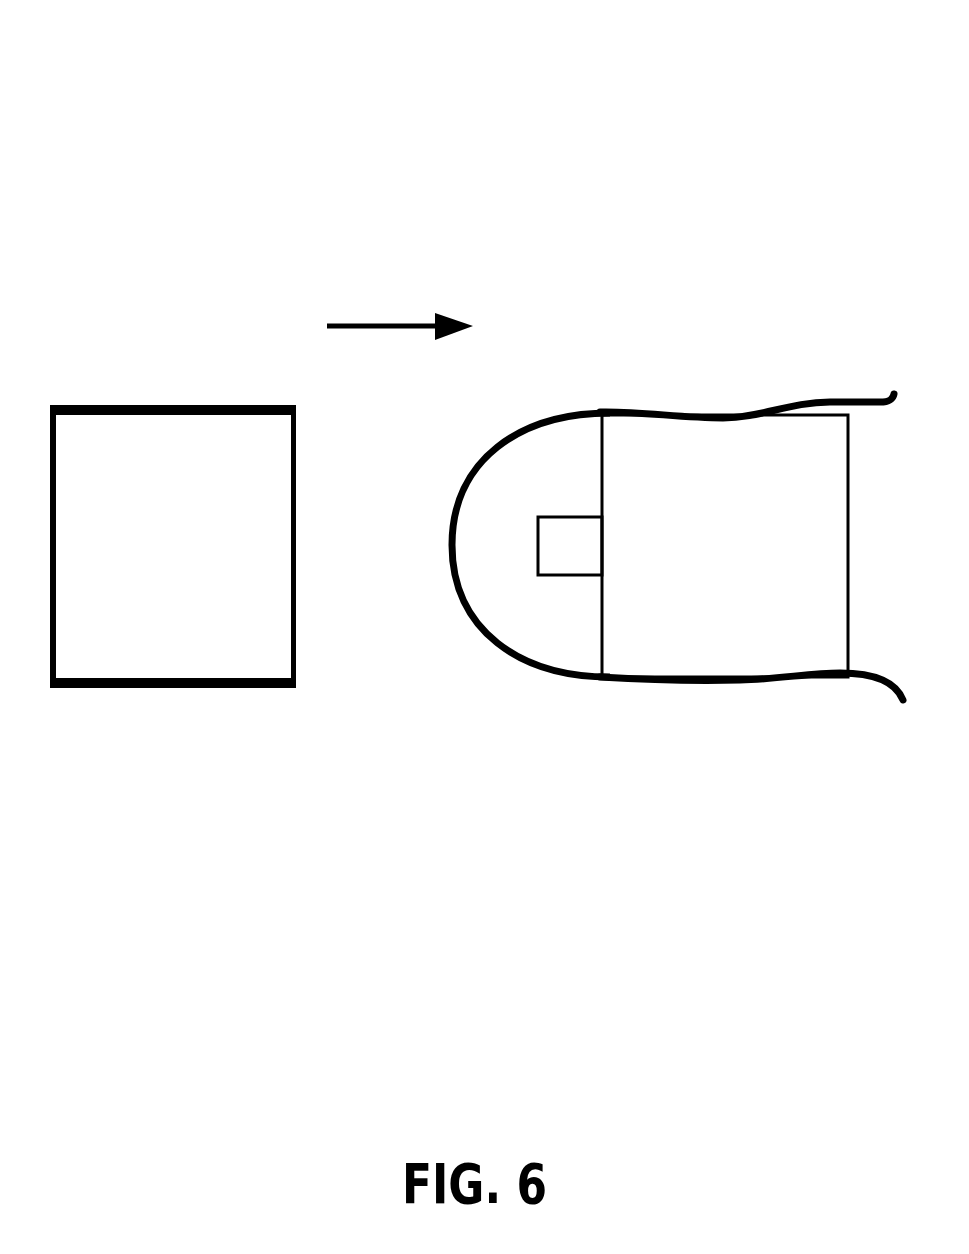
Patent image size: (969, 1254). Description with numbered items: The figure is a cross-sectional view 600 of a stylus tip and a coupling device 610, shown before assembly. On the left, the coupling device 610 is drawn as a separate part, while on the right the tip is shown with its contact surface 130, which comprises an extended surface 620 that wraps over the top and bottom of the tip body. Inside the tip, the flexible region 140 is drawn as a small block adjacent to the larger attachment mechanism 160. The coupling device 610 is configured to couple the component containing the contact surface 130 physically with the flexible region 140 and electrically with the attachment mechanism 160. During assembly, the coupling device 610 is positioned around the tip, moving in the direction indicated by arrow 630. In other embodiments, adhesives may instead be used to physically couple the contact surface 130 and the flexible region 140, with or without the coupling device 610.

The cross-sectional view 600 is at (124, 146).
The coupling device 610 is at (140, 497).
The extended surface 620 is at (651, 410).
The arrow 630 is at (385, 330).
The contact surface 130 is at (495, 640).
The flexible region 140 is at (553, 623).
The attachment mechanism 160 is at (730, 543).